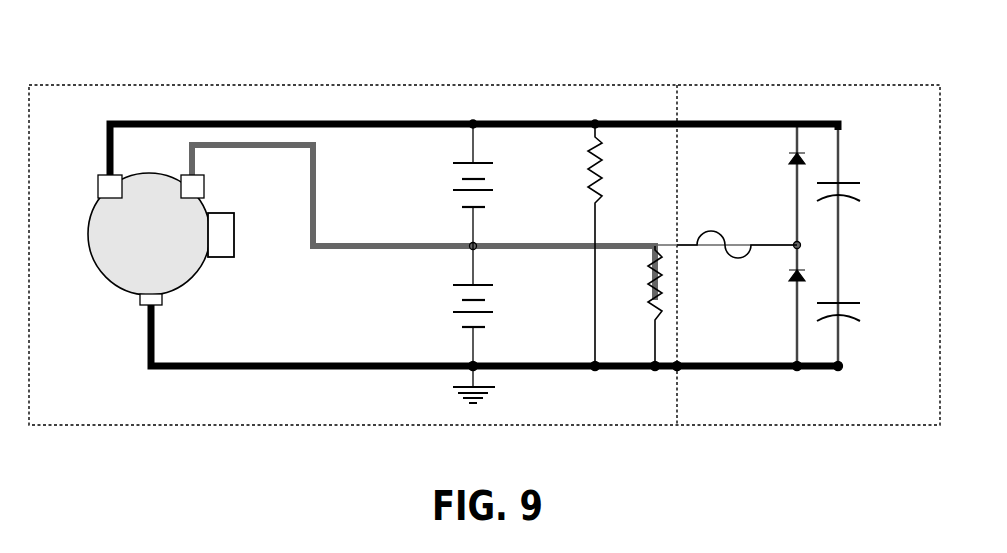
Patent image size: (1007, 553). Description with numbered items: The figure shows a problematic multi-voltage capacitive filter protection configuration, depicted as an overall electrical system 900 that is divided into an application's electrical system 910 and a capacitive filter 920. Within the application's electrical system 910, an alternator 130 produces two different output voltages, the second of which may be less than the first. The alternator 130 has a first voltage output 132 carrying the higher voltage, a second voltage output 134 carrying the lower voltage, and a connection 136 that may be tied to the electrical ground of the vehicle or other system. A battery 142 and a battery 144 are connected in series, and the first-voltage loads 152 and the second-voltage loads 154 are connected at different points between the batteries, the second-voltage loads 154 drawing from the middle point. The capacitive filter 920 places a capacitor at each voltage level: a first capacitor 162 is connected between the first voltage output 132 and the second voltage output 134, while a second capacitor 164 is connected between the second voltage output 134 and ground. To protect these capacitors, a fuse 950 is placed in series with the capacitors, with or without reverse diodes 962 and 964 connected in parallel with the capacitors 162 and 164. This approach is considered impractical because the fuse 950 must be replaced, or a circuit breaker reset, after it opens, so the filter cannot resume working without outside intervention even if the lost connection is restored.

The electrical system 900 is at (128, 42).
The application's electrical system 910 is at (400, 63).
The capacitive filter 920 is at (818, 63).
The alternator 130 is at (132, 262).
The first voltage output 132 is at (105, 173).
The second voltage output 134 is at (184, 173).
The connection 136 is at (144, 303).
The battery 142 is at (457, 189).
The battery 144 is at (458, 311).
The V1 loads 152 is at (595, 167).
The V2 loads 154 is at (655, 290).
The capacitor 162 is at (857, 183).
The capacitor 164 is at (852, 303).
The fuse 950 is at (735, 256).
The reverse diode 962 is at (790, 160).
The reverse diode 964 is at (790, 279).